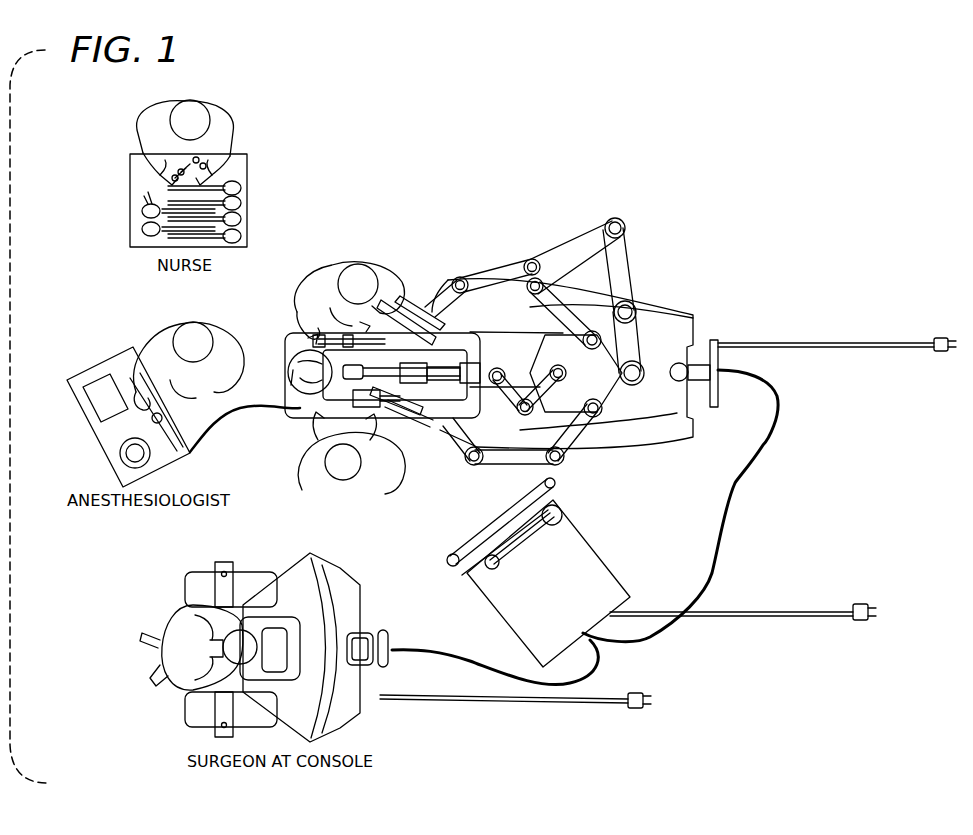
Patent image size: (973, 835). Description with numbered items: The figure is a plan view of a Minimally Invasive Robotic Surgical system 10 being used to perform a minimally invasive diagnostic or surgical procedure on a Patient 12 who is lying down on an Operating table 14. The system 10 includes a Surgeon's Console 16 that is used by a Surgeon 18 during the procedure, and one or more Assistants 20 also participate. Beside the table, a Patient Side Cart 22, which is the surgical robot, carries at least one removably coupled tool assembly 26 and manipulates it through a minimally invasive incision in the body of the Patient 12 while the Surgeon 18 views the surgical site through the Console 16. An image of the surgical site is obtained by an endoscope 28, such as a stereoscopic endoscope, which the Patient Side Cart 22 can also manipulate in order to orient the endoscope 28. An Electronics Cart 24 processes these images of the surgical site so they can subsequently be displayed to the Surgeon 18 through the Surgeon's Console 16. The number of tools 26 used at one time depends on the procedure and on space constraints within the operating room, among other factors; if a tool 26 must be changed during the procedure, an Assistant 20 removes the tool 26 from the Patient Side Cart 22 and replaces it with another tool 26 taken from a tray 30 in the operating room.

The Minimally Invasive Robotic Surgical (MIRS) system 10 is at (847, 251).
The Patient 12 is at (288, 345).
The Operating table 14 is at (503, 290).
The Surgeon's Console 16 is at (350, 573).
The Surgeon 18 is at (173, 623).
The Assistant 20 is at (300, 290).
The Patient Side Cart 22 is at (662, 302).
The Electronics Cart 24 is at (575, 522).
The tool assembly 26 is at (243, 188).
The endoscope 28 is at (433, 435).
The tray 30 is at (245, 152).